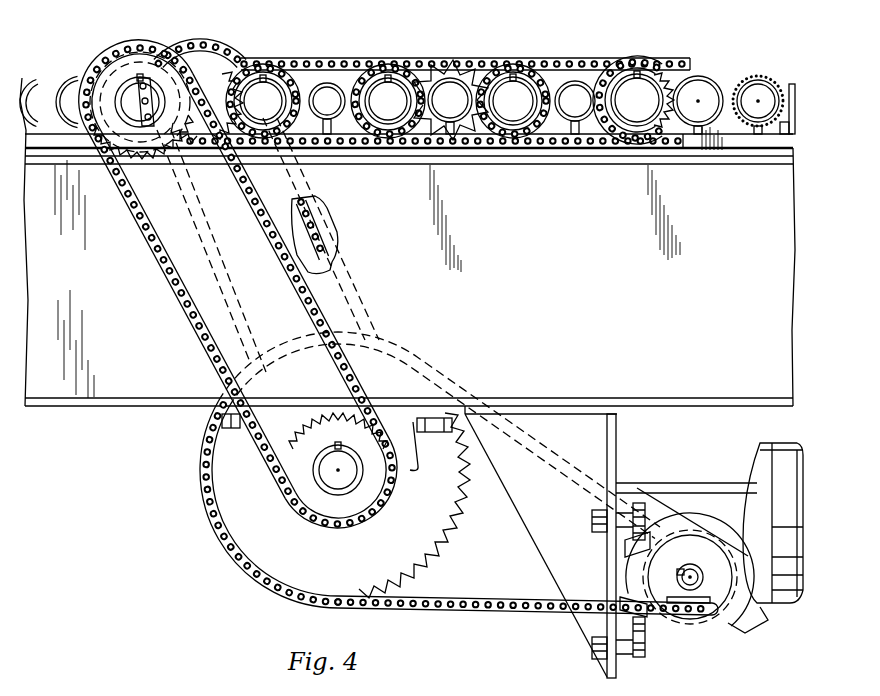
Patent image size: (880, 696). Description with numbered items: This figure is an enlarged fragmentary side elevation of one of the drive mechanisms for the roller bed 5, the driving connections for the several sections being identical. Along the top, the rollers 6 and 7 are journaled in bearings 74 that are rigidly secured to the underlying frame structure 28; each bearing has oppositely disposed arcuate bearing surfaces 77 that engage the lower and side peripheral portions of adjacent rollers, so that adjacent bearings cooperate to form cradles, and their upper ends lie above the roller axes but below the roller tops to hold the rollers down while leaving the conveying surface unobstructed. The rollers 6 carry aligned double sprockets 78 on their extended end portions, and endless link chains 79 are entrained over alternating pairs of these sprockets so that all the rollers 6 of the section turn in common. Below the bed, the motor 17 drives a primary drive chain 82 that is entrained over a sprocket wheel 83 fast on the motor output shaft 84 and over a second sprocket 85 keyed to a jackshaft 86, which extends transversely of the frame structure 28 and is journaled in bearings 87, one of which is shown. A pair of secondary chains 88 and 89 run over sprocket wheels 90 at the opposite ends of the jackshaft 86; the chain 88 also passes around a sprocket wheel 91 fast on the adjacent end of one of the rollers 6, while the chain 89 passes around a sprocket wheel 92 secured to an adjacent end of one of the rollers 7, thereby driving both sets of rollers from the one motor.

The roller bed 5 is at (597, 46).
The rollers 6 is at (283, 69).
The rollers 7 is at (331, 78).
The motor 17 is at (764, 450).
The frame structure 28 is at (128, 410).
The bearings 74 is at (792, 84).
The arcuate bearing surfaces 77 is at (745, 102).
The double sprockets 78 is at (399, 66).
The endless link chains 79 is at (427, 62).
The primary drive chain 82 is at (517, 613).
The sprocket wheel 83 is at (690, 583).
The output shaft 84 is at (697, 588).
The second sprocket 85 is at (443, 526).
The jackshaft 86 is at (337, 492).
The bearings 87 is at (430, 454).
The secondary chain 88 is at (164, 281).
The secondary chain 89 is at (338, 237).
The sprocket wheels 90 is at (369, 498).
The sprocket wheel 91 is at (112, 57).
The sprocket wheel 92 is at (203, 56).